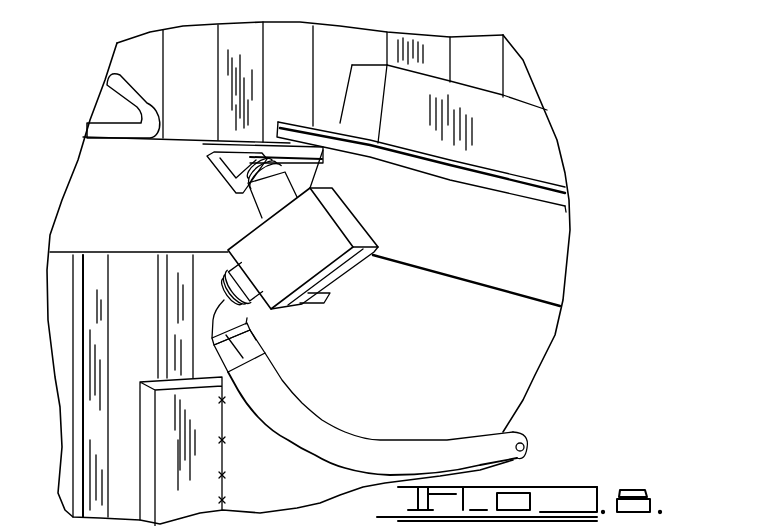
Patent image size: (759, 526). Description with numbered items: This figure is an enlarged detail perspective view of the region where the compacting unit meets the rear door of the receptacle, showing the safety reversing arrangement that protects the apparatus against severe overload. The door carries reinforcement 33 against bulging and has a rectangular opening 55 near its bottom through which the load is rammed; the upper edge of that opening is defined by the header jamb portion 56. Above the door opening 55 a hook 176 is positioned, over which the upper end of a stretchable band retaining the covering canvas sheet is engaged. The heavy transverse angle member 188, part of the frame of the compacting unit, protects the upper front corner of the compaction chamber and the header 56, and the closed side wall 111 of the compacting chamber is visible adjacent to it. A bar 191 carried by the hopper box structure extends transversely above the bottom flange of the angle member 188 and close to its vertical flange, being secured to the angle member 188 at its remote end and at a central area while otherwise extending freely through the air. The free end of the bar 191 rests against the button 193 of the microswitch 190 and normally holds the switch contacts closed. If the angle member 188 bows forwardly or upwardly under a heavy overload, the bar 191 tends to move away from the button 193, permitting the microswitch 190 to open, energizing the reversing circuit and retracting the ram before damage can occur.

The door reinforcement 33 is at (238, 87).
The hook 176 is at (136, 97).
The transverse angle member 188 is at (490, 107).
The bar 191 is at (213, 164).
The button 193 is at (248, 196).
The microswitch 190 is at (298, 252).
The side wall 111 is at (422, 336).
The rectangular opening 55 is at (204, 271).
The header jamb portion 56 is at (260, 525).